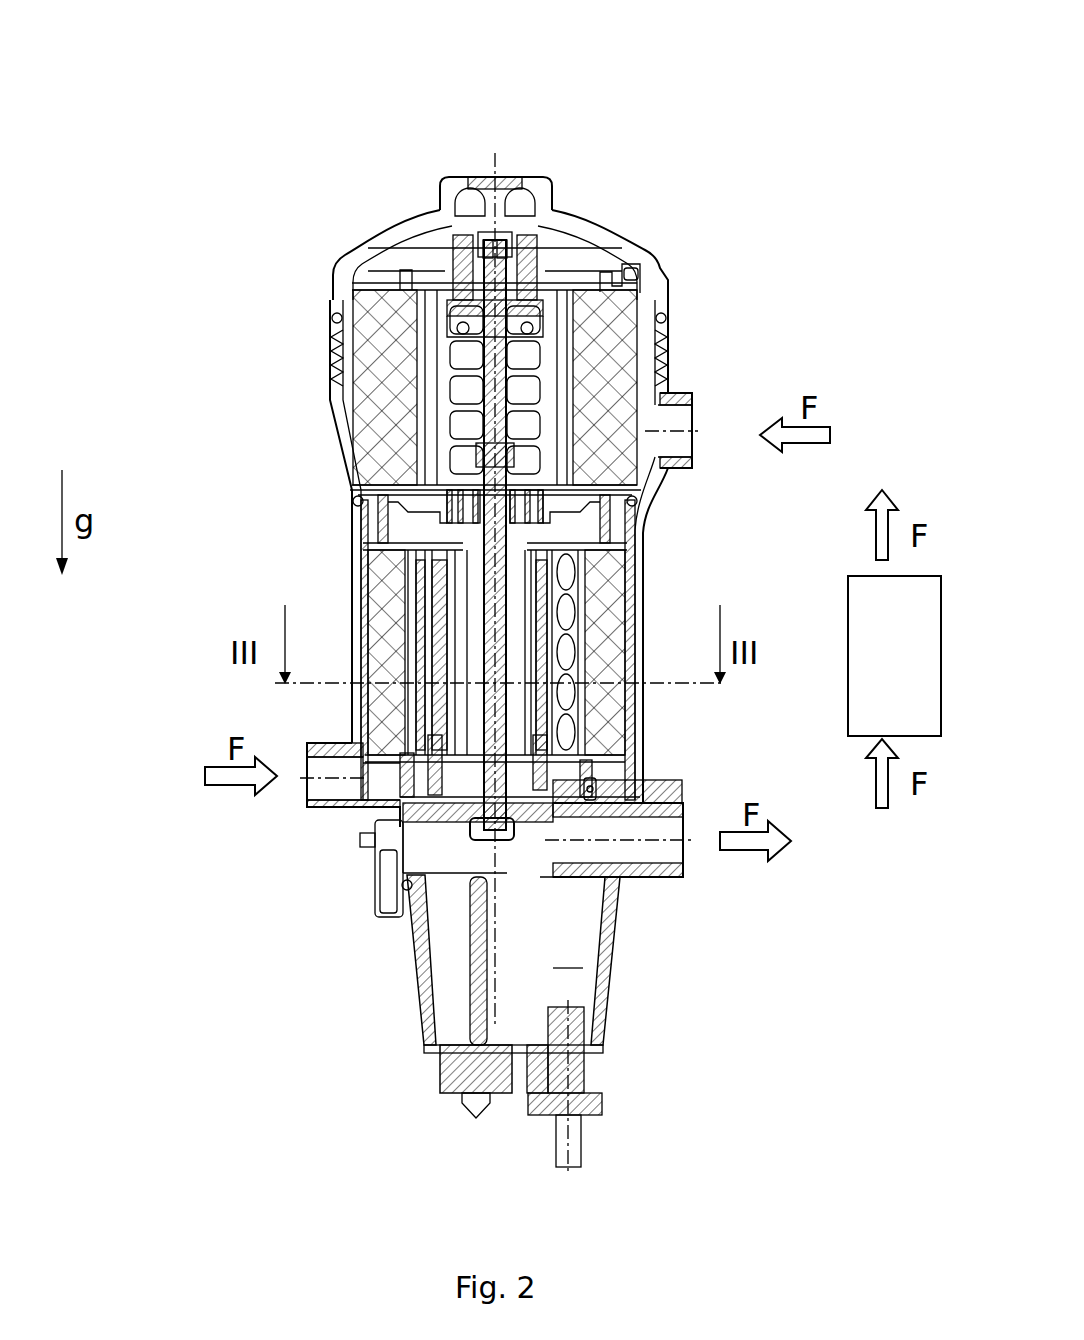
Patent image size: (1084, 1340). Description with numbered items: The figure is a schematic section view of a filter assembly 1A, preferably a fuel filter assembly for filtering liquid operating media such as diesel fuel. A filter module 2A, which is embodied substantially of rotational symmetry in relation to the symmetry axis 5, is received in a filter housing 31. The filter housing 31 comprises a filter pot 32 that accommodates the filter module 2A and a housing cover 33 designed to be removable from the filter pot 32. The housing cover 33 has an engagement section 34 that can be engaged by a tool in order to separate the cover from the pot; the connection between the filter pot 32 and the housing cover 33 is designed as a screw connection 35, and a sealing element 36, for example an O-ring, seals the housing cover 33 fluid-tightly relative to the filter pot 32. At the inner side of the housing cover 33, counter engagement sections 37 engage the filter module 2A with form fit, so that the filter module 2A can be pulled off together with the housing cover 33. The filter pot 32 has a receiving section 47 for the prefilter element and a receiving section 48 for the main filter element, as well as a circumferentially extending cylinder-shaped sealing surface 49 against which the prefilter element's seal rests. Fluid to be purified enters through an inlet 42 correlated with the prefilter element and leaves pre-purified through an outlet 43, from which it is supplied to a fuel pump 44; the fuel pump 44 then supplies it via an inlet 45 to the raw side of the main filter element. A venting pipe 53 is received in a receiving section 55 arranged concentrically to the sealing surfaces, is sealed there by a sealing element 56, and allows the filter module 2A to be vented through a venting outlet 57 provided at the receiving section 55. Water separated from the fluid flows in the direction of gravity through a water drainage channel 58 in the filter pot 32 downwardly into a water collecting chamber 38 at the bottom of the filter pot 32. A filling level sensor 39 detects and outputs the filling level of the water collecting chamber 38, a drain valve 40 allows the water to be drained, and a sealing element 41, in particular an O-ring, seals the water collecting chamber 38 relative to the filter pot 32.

The filter assembly 1A is at (486, 82).
The filter module 2A is at (594, 292).
The symmetry axis 5 is at (492, 163).
The filter housing 31 is at (415, 506).
The filter pot 32 is at (315, 446).
The housing cover 33 is at (322, 260).
The engagement section 34 is at (553, 191).
The screw connection 35 is at (668, 366).
The sealing element 36 is at (666, 323).
The counter engagement sections 37 is at (634, 273).
The water collecting chamber 38 is at (626, 984).
The filling level sensor 39 is at (457, 1094).
The drain valve 40 is at (567, 1010).
The sealing element 41 is at (404, 862).
The inlet 42 is at (308, 742).
The outlet 43 is at (667, 877).
The fuel pump 44 is at (913, 671).
The inlet 45 is at (662, 470).
The receiving section 47 is at (349, 611).
The receiving section 48 is at (342, 470).
The sealing surface 49 is at (590, 794).
The venting pipe 53 is at (482, 602).
The receiving section 55 is at (473, 825).
The sealing element 56 is at (420, 797).
The venting outlet 57 is at (488, 845).
The water drainage channel 58 is at (395, 812).